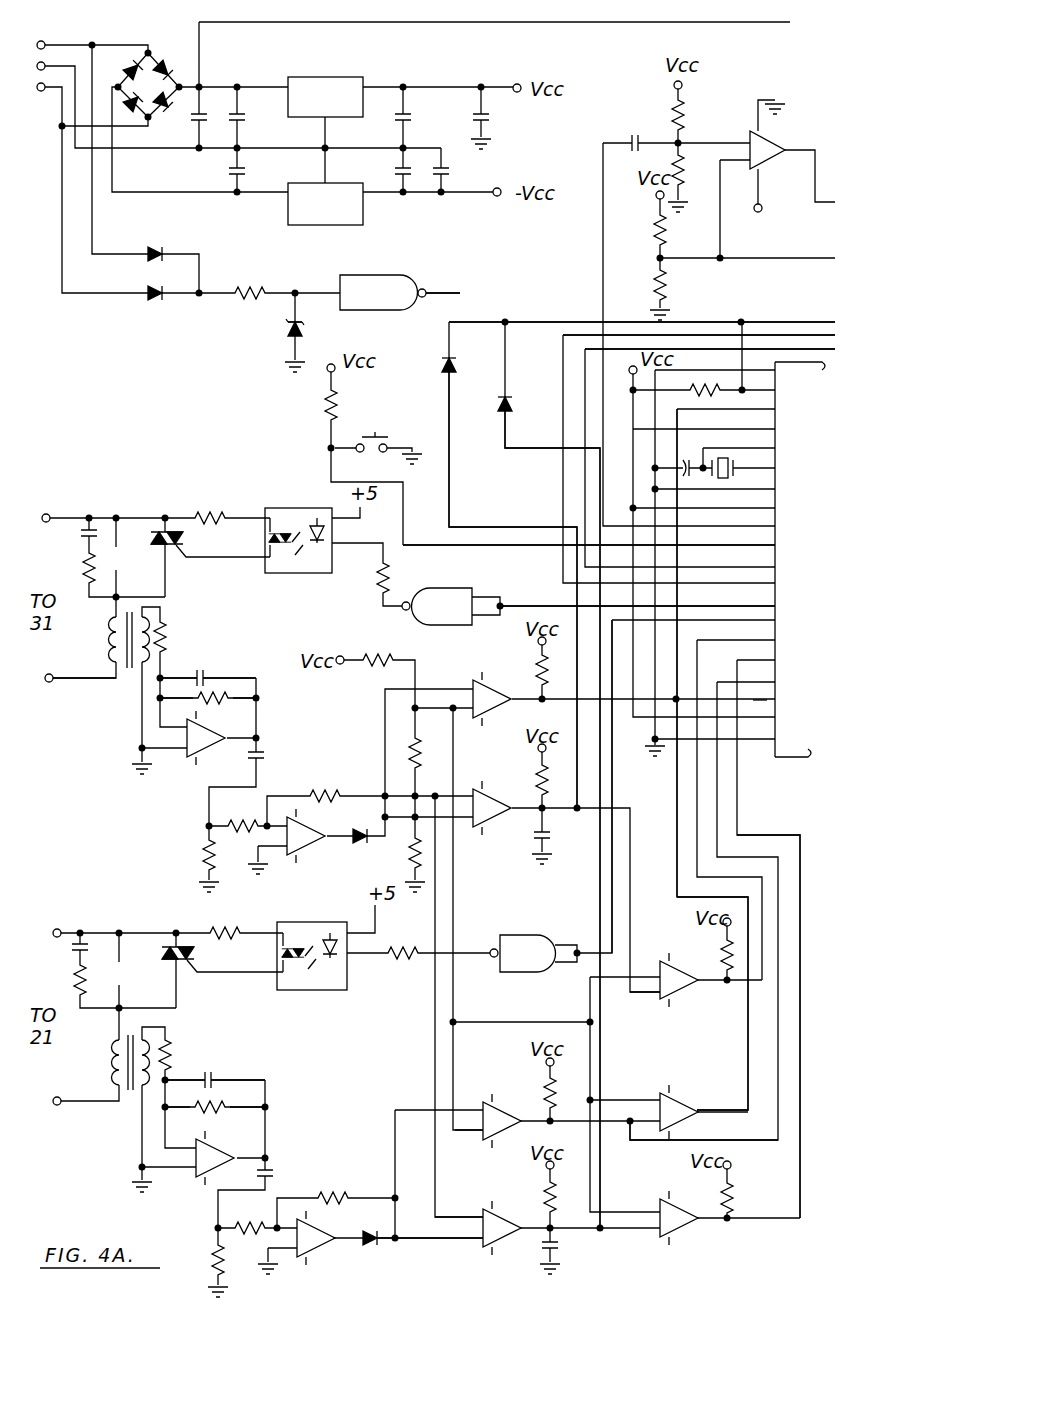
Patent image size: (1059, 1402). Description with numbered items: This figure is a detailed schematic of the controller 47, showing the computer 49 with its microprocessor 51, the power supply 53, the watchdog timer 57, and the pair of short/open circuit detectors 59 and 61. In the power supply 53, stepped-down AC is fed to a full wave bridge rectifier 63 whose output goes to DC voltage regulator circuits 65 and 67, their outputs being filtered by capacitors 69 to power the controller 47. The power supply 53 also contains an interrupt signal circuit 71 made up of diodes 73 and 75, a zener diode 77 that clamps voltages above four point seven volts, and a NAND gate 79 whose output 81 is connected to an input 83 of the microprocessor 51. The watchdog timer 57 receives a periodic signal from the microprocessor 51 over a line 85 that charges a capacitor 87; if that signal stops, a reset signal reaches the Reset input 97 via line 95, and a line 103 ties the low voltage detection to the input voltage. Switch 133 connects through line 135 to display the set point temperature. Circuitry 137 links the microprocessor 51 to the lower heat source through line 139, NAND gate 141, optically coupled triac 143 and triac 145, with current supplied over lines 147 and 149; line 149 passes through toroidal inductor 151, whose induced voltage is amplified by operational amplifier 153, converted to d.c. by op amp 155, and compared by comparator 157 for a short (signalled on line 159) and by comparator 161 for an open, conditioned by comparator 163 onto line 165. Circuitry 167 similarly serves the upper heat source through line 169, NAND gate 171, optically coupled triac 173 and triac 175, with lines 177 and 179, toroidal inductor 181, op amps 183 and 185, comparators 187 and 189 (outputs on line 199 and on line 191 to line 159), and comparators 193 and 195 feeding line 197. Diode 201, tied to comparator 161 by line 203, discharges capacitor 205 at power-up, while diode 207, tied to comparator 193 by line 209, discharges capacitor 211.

The controller 47 is at (110, 398).
The computer 49 is at (815, 312).
The microprocessor 51 is at (820, 568).
The power supply 53 is at (55, 208).
The watchdog timer 57 is at (733, 112).
The short/open circuit detector 59 is at (312, 1090).
The short/open circuit detector 61 is at (308, 755).
The full wave bridge rectifier 63 is at (180, 55).
The DC voltage regulator circuit 65 is at (325, 72).
The DC voltage regulator circuit 67 is at (310, 235).
The capacitors 69 is at (440, 112).
The interrupt signal circuit 71 is at (240, 322).
The diode 73 is at (160, 246).
The diode 75 is at (155, 305).
The zener diode 77 is at (285, 348).
The NAND gate 79 is at (388, 272).
The output 81 is at (455, 290).
The input 83 is at (767, 700).
The line 85 is at (603, 243).
The capacitor 87 is at (632, 130).
The line 95 is at (738, 325).
The Reset input 97 is at (765, 393).
The line 103 is at (545, 28).
The switch 133 is at (385, 432).
The line 135 is at (453, 548).
The circuitry 137 is at (85, 745).
The line 139 is at (545, 602).
The NAND gate 141 is at (445, 628).
The optically coupled triac 143 is at (302, 574).
The triac 145 is at (178, 552).
The line 147 is at (70, 512).
The line 149 is at (65, 683).
The toroidal inductor 151 is at (128, 695).
The operational amplifier 153 is at (185, 765).
The op amp 155 is at (308, 850).
The comparator 157 is at (500, 718).
The line 159 is at (678, 855).
The comparator 161 is at (502, 828).
The comparator 163 is at (683, 1000).
The line 165 is at (733, 990).
The circuitry 167 is at (95, 1128).
The line 169 is at (615, 795).
The NAND gate 171 is at (520, 978).
The optically coupled triac 173 is at (322, 990).
The triac 175 is at (187, 965).
The line 177 is at (72, 928).
The line 179 is at (85, 1098).
The toroidal inductor 181 is at (130, 1100).
The op amp 183 is at (210, 1178).
The op amp 185 is at (318, 1250).
The comparator 187 is at (488, 1145).
The comparator 189 is at (660, 1095).
The line 191 is at (748, 1055).
The comparator 193 is at (486, 1250).
The comparator 195 is at (692, 1238).
The line 197 is at (798, 1190).
The line 199 is at (748, 1148).
The diode 201 is at (440, 368).
The line 203 is at (472, 527).
The capacitor 205 is at (558, 840).
The diode 207 is at (497, 412).
The line 209 is at (527, 448).
The capacitor 211 is at (560, 1245).